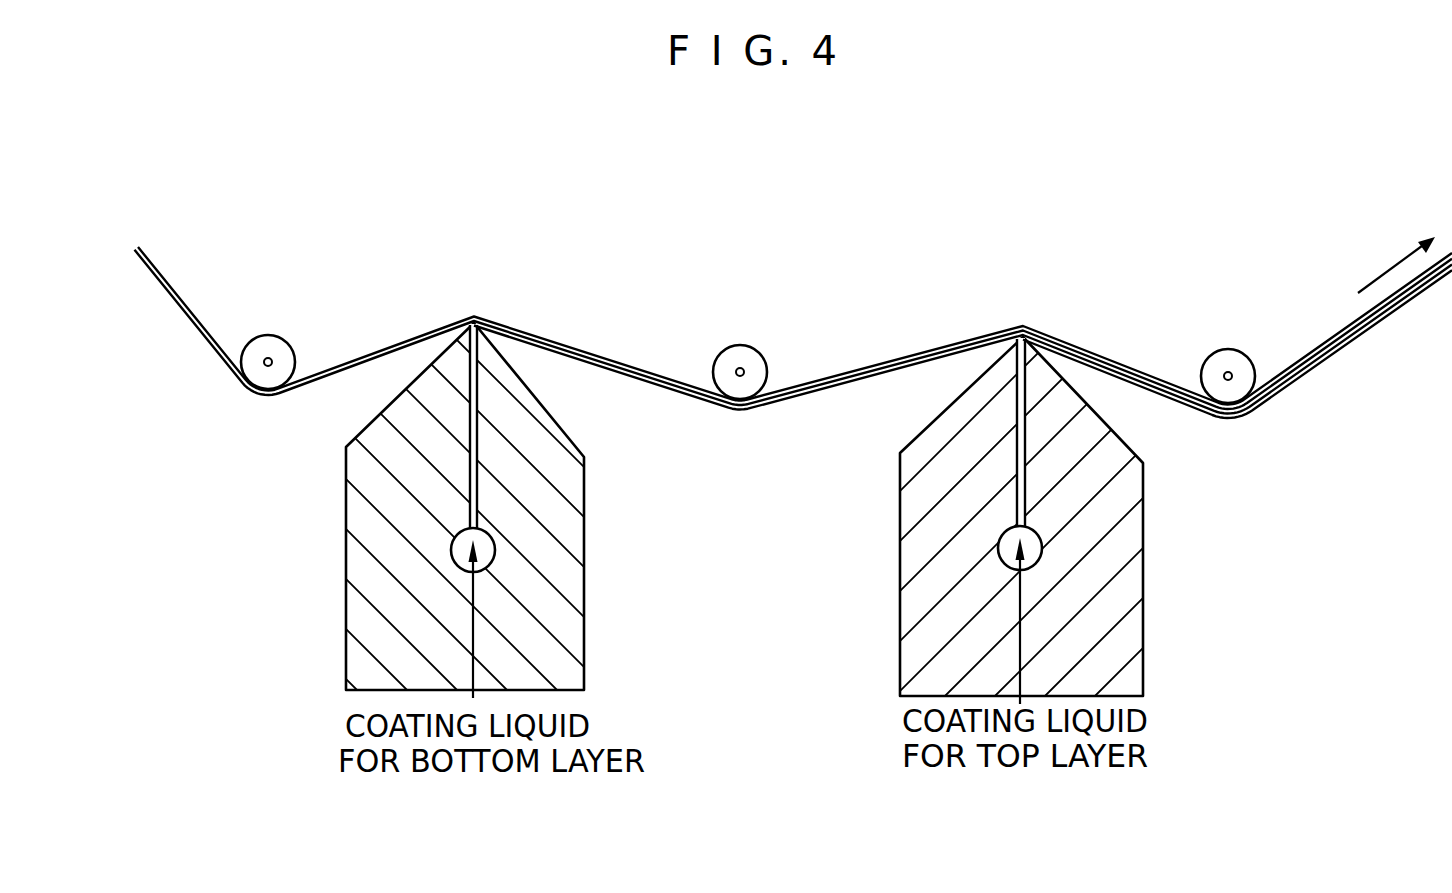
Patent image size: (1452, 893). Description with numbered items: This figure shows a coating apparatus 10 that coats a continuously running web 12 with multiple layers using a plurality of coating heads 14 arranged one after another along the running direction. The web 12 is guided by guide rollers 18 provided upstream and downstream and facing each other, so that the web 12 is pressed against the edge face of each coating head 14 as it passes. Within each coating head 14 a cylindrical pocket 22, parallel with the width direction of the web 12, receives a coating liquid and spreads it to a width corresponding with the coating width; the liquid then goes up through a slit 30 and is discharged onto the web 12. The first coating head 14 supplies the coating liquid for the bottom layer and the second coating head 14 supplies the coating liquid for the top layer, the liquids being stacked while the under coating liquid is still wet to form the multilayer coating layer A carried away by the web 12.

The coating apparatus 10 is at (1041, 288).
The web 12 is at (380, 347).
The coating head 14 is at (562, 552).
The guide roller 18 is at (281, 353).
The pocket 22 is at (462, 542).
The slit 30 is at (474, 440).
The coating layer A is at (1340, 358).